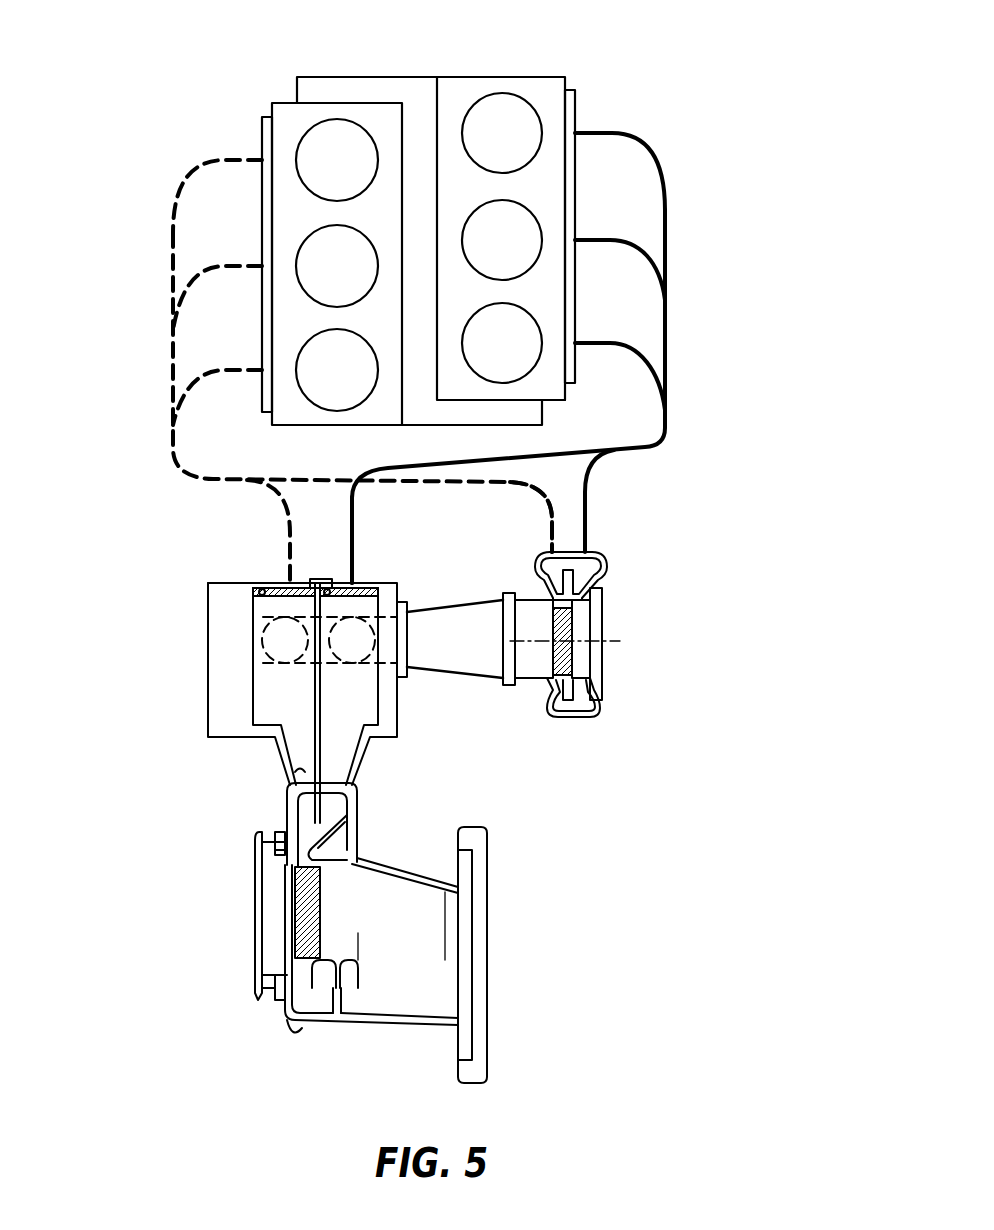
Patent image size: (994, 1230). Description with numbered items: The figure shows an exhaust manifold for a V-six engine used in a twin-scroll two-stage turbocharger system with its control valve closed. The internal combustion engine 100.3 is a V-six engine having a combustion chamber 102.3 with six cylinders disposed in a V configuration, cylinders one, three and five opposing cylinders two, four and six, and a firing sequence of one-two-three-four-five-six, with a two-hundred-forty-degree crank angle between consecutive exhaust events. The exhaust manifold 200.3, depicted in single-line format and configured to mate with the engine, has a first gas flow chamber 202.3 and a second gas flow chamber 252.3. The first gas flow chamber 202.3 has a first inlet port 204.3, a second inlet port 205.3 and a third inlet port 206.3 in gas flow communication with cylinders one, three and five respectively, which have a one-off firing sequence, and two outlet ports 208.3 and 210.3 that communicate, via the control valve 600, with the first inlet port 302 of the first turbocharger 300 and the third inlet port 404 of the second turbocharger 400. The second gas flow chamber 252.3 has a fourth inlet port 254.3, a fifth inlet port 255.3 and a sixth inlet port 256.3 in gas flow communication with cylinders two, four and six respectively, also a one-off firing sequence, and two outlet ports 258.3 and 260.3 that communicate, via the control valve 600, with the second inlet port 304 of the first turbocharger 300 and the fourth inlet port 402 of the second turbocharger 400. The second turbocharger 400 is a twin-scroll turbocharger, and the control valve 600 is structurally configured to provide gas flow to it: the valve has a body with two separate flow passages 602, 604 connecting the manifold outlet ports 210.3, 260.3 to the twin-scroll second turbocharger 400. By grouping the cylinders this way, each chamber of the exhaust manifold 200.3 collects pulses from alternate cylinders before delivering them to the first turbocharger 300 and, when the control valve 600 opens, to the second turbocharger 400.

The internal combustion engine 100.3 is at (445, 216).
The combustion chamber 102.3 is at (337, 120).
The exhaust manifold 200.3 is at (422, 341).
The first gas flow chamber 202.3 is at (668, 442).
The first inlet port 204.3 is at (627, 138).
The second inlet port 205.3 is at (627, 243).
The third inlet port 206.3 is at (627, 345).
The outlet port 208.3 is at (593, 505).
The outlet port 210.3 is at (355, 538).
The second gas flow chamber 252.3 is at (188, 473).
The fourth inlet port 254.3 is at (203, 170).
The fifth inlet port 255.3 is at (203, 277).
The sixth inlet port 256.3 is at (215, 373).
The outlet port 258.3 is at (540, 513).
The outlet port 260.3 is at (287, 547).
The first turbocharger 300 is at (545, 667).
The first inlet port 302 is at (603, 563).
The second inlet port 304 is at (537, 565).
The second turbocharger 400 is at (335, 942).
The fourth inlet port 402 is at (302, 808).
The third inlet port 404 is at (333, 808).
The control valve 600 is at (256, 701).
The flow passage 602 is at (285, 664).
The flow passage 604 is at (352, 664).